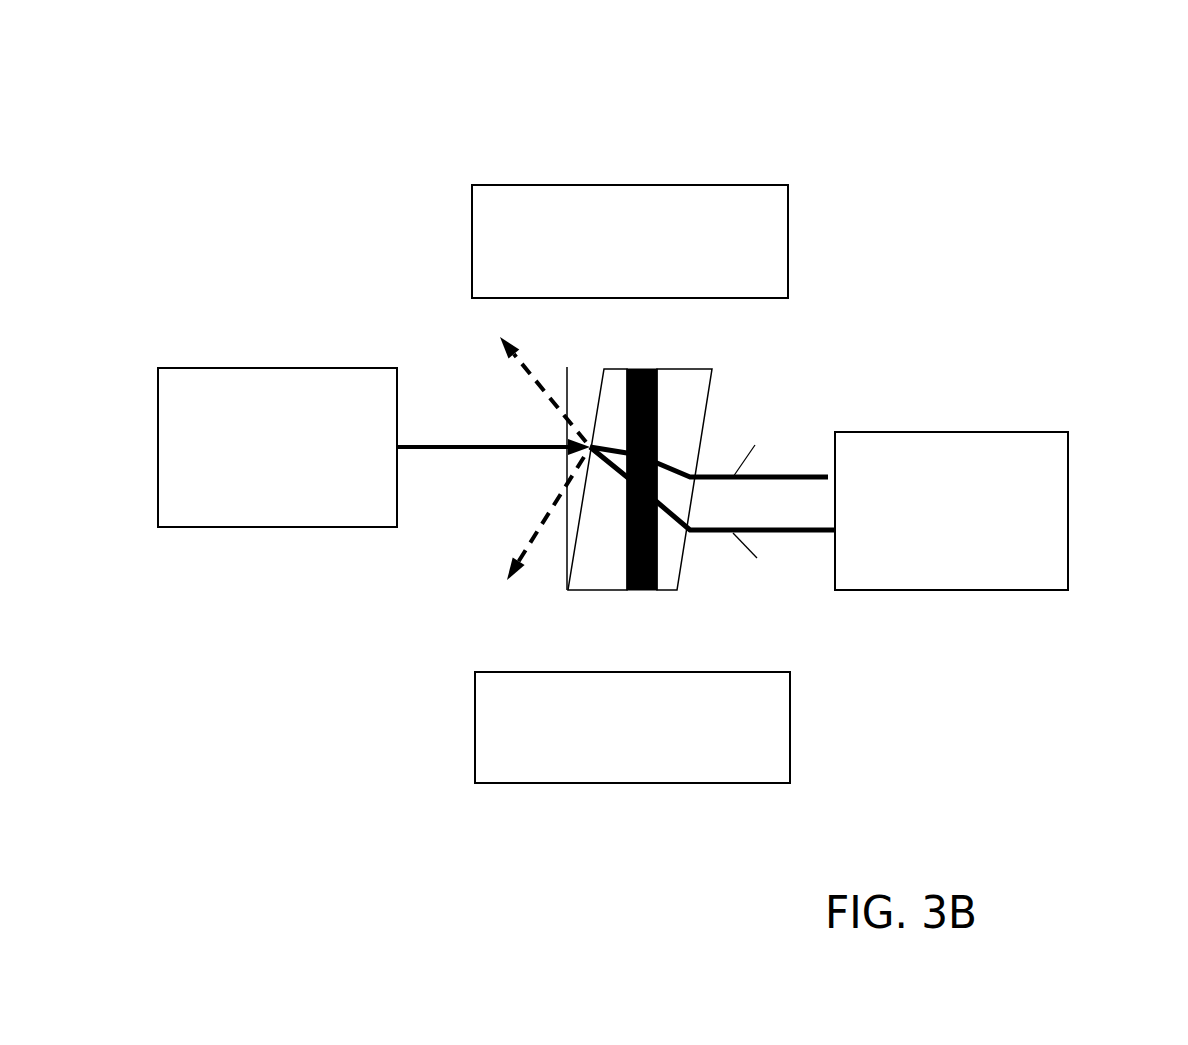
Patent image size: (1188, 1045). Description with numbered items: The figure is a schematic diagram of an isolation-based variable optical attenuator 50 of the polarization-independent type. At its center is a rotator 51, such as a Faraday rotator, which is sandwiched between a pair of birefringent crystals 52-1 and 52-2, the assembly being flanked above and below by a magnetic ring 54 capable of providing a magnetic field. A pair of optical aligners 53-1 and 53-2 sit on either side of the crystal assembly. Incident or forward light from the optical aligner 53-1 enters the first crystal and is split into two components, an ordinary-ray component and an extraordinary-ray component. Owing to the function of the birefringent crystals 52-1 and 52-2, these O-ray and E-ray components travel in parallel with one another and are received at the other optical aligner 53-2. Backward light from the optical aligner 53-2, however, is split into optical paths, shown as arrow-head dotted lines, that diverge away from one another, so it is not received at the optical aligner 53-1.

The isolation-based VOA 50 is at (1084, 132).
The rotator 51 is at (643, 590).
The first birefringent crystal 52-1 is at (622, 368).
The second birefringent crystal 52-2 is at (675, 368).
The first optical aligner 53-1 is at (268, 368).
The second optical aligner 53-2 is at (1013, 430).
The magnetic ring 54 is at (788, 230).